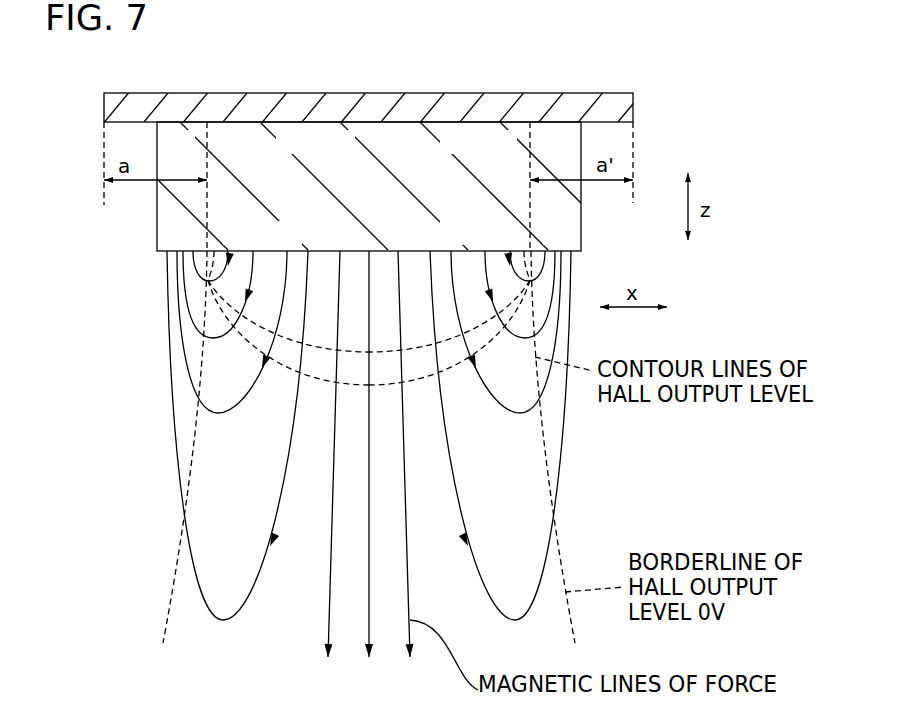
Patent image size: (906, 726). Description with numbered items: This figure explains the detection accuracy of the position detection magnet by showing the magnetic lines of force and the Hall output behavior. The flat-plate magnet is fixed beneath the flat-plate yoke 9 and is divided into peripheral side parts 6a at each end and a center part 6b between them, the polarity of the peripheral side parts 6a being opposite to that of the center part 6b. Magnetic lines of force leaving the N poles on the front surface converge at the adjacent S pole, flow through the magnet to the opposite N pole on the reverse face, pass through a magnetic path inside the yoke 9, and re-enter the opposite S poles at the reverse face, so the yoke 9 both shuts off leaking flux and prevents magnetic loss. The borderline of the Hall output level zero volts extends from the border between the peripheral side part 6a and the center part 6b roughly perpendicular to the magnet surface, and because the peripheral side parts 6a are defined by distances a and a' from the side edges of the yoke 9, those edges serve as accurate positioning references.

The peripheral side part 6a is at (168, 157).
The center part 6b is at (350, 185).
The yoke 9 is at (378, 105).